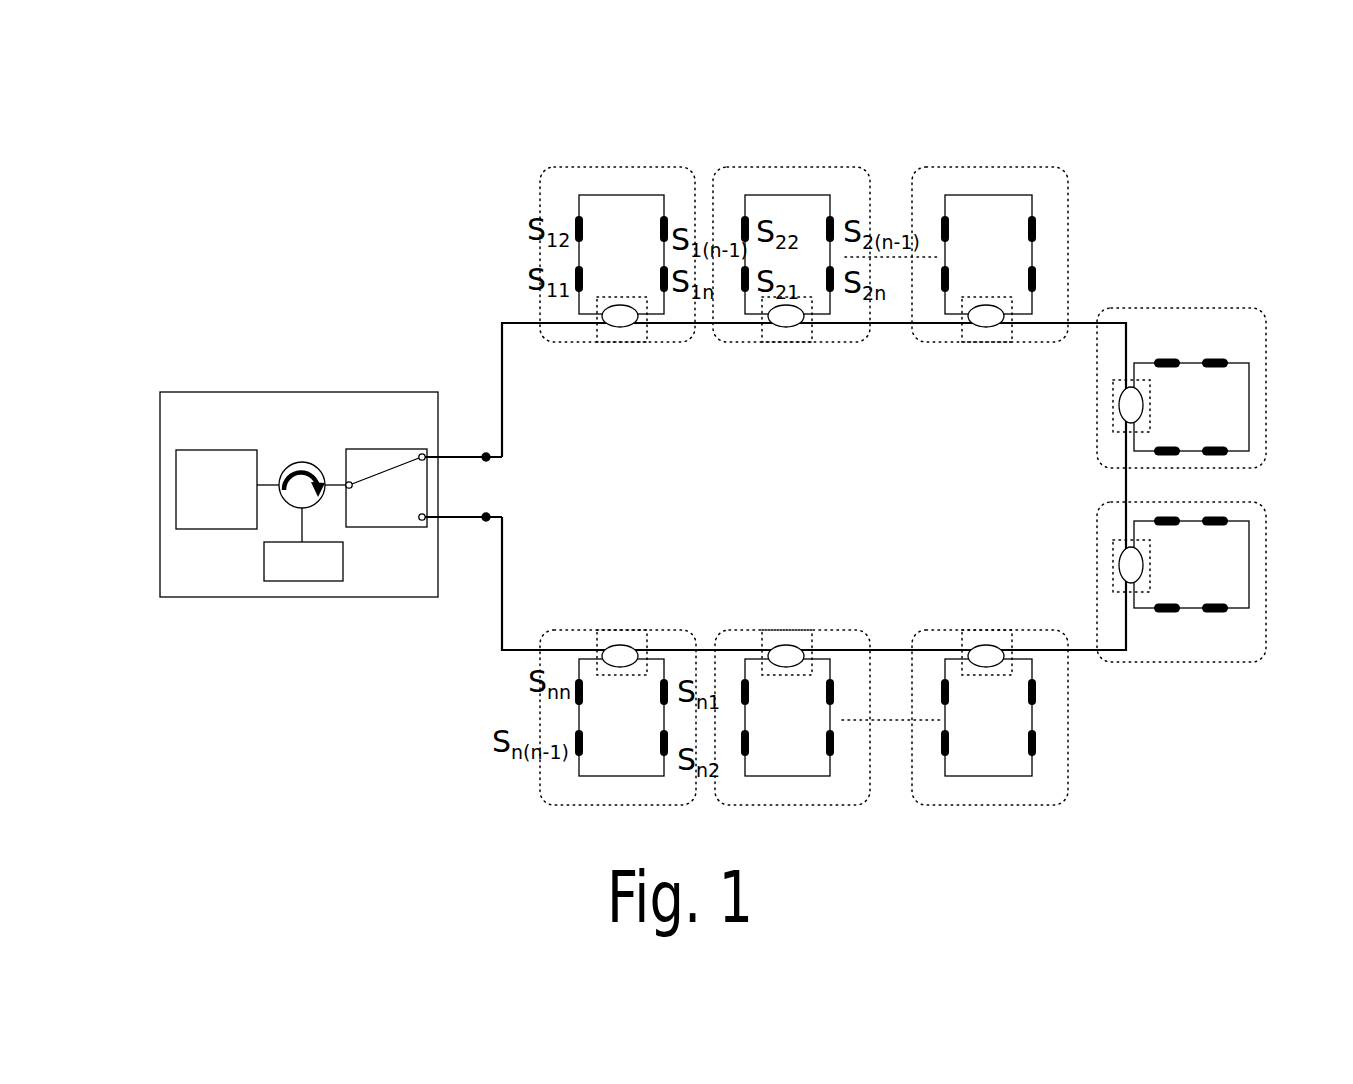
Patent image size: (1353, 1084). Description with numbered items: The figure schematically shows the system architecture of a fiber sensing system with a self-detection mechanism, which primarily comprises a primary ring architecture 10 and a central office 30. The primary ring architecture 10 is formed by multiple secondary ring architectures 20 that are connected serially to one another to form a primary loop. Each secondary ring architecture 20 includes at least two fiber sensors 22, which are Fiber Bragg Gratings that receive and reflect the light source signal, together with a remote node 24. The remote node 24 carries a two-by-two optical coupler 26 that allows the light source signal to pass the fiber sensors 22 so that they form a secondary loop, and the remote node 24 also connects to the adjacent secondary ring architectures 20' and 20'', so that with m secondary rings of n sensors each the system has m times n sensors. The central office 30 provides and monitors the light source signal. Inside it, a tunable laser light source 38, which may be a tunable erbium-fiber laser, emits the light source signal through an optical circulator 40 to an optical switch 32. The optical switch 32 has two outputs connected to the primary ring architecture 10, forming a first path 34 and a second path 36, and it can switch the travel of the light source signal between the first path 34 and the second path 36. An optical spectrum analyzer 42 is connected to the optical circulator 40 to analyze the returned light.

The primary ring architecture 10 is at (1197, 269).
The secondary ring architecture 20 is at (548, 239).
The adjacent secondary ring architecture 20' is at (791, 203).
The adjacent secondary ring architecture 20'' is at (990, 203).
The fiber sensor 22 is at (575, 222).
The remote node 24 is at (618, 327).
The optical coupler 26 is at (634, 325).
The central office 30 is at (242, 375).
The optical switch 32 is at (397, 527).
The first path 34 is at (486, 453).
The second path 36 is at (486, 520).
The tunable laser light source 38 is at (176, 485).
The optical circulator 40 is at (302, 462).
The optical spectrum analyzer 42 is at (302, 581).